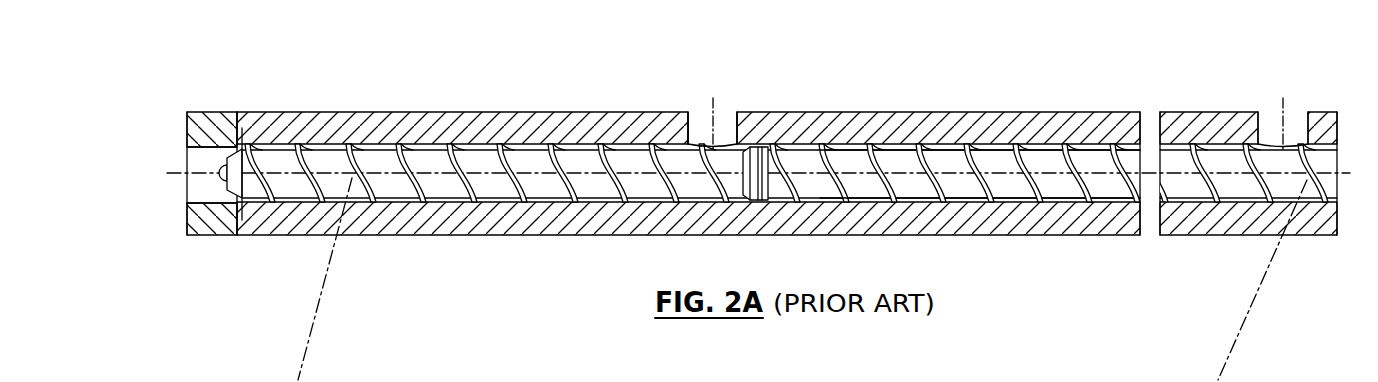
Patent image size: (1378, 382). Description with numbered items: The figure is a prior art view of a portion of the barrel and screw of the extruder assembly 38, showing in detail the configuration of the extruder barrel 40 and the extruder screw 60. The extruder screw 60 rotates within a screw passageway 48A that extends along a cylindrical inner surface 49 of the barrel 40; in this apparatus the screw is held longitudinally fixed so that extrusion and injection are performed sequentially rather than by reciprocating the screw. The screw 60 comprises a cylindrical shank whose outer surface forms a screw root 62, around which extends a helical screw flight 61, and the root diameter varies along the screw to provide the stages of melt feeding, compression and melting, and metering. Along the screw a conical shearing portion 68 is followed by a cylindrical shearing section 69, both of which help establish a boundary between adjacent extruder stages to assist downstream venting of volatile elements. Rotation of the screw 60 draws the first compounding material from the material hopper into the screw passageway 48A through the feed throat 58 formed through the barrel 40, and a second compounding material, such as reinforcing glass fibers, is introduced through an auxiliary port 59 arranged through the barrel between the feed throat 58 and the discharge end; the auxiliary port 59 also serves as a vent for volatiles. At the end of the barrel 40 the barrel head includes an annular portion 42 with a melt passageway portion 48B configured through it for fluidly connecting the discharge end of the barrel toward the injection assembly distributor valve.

The extruder assembly 38 is at (718, 84).
The extruder barrel 40 is at (1163, 128).
The annular portion 42 is at (216, 112).
The screw passageway 48A is at (243, 212).
The melt passageway portion 48B is at (197, 192).
The cylindrical inner surface 49 is at (498, 198).
The feed throat 58 is at (1293, 118).
The auxiliary port 59 is at (724, 122).
The extruder screw 60 is at (870, 157).
The helical screw flight 61 is at (963, 145).
The screw root 62 is at (992, 143).
The conical shearing portion 68 is at (773, 140).
The cylindrical shearing section 69 is at (752, 143).